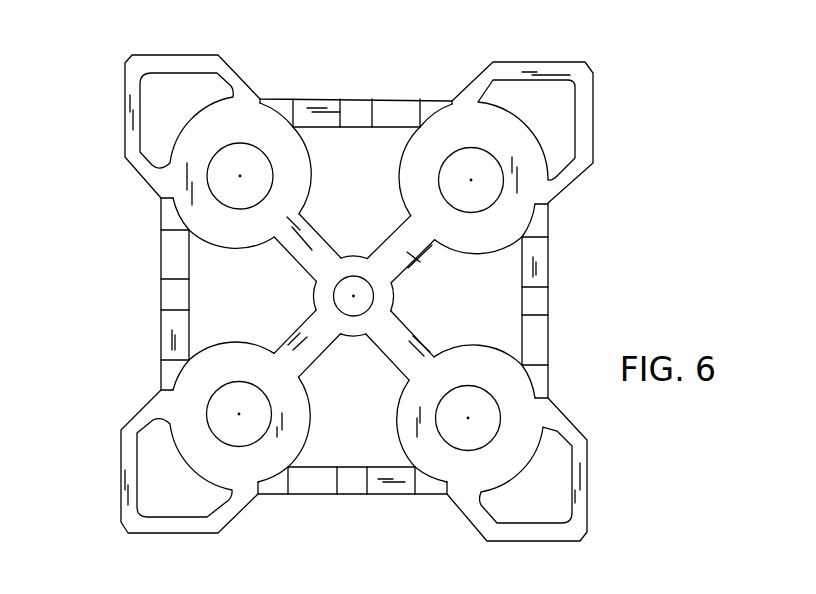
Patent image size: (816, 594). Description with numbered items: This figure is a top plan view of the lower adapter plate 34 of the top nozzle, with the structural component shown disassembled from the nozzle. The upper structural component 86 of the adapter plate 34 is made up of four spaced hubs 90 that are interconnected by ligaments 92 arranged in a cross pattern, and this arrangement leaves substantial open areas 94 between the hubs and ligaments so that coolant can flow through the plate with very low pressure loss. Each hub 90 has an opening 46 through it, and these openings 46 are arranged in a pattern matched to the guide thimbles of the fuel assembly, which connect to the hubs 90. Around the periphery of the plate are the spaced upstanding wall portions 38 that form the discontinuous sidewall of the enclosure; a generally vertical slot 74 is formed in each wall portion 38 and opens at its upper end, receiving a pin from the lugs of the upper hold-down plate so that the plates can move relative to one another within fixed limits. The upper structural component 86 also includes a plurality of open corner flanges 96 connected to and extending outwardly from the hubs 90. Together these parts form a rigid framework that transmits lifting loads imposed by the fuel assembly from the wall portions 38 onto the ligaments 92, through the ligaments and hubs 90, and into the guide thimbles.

The lower adapter plate 34 is at (606, 60).
The upstanding wall portions 38 is at (403, 99).
The openings 46 is at (272, 187).
The vertical slot 74 is at (370, 118).
The upper structural component 86 is at (582, 424).
The hubs 90 is at (400, 180).
The ligaments 92 is at (297, 340).
The open areas 94 is at (328, 141).
The open corner flanges 96 is at (125, 100).